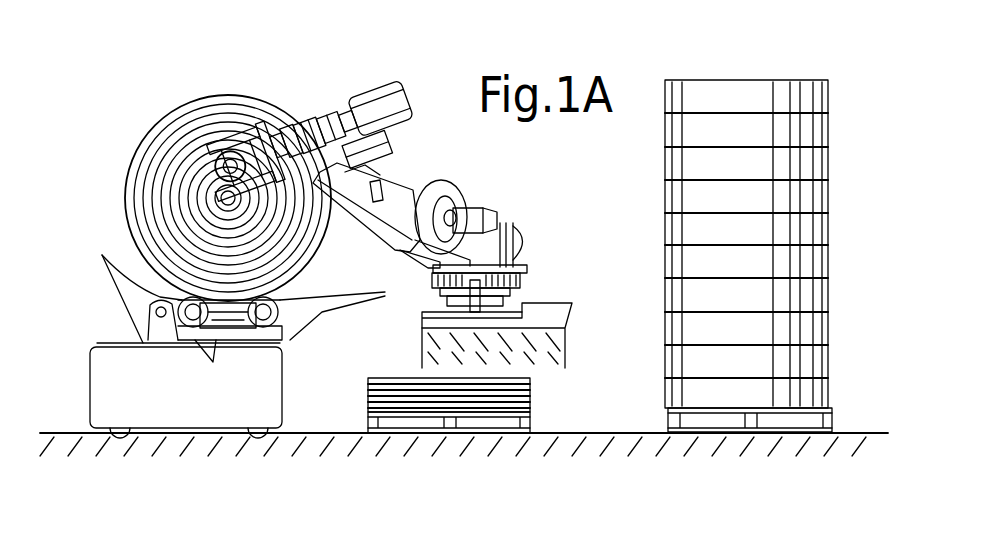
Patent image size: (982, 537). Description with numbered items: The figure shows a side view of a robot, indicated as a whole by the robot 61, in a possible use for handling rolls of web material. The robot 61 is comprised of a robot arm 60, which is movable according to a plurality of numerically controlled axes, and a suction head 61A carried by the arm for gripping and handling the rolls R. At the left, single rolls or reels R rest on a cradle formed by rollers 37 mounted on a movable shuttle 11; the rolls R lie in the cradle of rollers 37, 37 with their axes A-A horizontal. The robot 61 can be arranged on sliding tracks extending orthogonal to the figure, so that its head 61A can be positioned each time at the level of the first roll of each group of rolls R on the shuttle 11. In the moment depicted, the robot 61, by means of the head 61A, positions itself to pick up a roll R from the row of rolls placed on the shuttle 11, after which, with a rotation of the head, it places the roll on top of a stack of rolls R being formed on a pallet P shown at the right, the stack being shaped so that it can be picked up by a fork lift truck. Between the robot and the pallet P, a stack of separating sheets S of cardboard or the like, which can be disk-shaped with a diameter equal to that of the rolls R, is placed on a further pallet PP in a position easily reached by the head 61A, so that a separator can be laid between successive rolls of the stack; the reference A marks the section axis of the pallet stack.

The shuttle 11 is at (107, 383).
The rollers 37 is at (257, 332).
The roll R is at (165, 143).
The axis of the roll A-A is at (226, 201).
The suction head 61A is at (240, 138).
The robot 61 is at (398, 163).
The robot arm 60 is at (462, 193).
The separating sheets S is at (393, 378).
The pallet P is at (668, 420).
The pallet for separating sheets PP is at (530, 420).
The section axis A is at (745, 100).